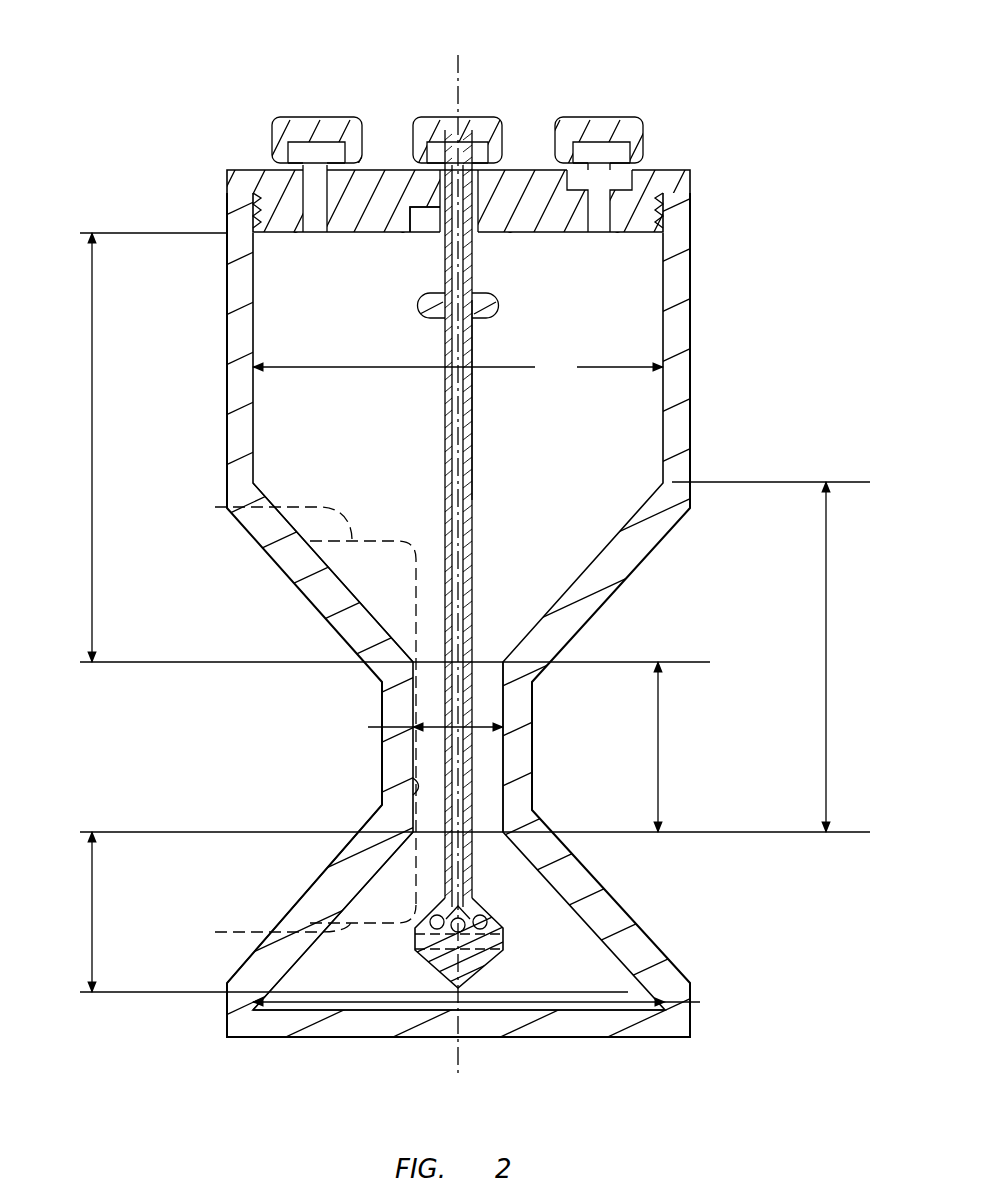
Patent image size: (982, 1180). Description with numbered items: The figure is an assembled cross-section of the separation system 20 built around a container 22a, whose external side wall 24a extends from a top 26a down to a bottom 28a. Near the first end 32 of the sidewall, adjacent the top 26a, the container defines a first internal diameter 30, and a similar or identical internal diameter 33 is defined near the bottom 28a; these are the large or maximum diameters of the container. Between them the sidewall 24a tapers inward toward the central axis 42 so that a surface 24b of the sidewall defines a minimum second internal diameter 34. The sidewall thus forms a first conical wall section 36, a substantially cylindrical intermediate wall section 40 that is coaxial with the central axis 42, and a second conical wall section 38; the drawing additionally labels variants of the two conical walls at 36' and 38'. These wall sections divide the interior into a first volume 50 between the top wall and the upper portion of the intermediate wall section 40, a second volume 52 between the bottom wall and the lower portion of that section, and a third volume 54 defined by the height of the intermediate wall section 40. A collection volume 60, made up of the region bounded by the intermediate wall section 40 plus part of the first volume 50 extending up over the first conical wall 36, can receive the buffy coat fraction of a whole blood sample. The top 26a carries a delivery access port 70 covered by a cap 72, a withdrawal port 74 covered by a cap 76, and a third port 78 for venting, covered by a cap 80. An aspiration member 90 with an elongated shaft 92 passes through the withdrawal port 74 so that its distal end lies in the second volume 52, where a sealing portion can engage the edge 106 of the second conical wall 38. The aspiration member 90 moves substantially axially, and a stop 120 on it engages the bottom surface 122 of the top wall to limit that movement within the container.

The separation system 20 is at (120, 166).
The container 22a is at (540, 716).
The side wall 24a is at (532, 768).
The surface of the sidewall 24b is at (500, 690).
The top 26a is at (692, 182).
The bottom 28a is at (613, 1027).
The first internal diameter 30 is at (458, 367).
The first end of the sidewall 32 is at (660, 205).
The internal diameter 33 is at (495, 1004).
The second internal diameter 34 is at (421, 729).
The first conical wall section 36 is at (288, 572).
The alternate upper converging wall 36' is at (294, 698).
The second conical wall section 38 is at (268, 894).
The alternate lower diverging wall 38' is at (292, 923).
The intermediate wall section 40 is at (383, 805).
The central axis 42 is at (456, 86).
The first volume 50 is at (392, 447).
The second volume 52 is at (351, 912).
The third volume 54 is at (661, 747).
The volume 60 is at (475, 657).
The access port 70 is at (292, 148).
The cap 72 is at (345, 118).
The withdrawal port 74 is at (428, 143).
The cap 76 is at (483, 118).
The third port 78 is at (572, 145).
The cap 80 is at (625, 118).
The aspiration member 90 is at (440, 442).
The elongated shaft 92 is at (472, 400).
The edge of the conical wall 106 is at (413, 833).
The stop 120 is at (498, 302).
The bottom surface of the top wall 122 is at (432, 223).